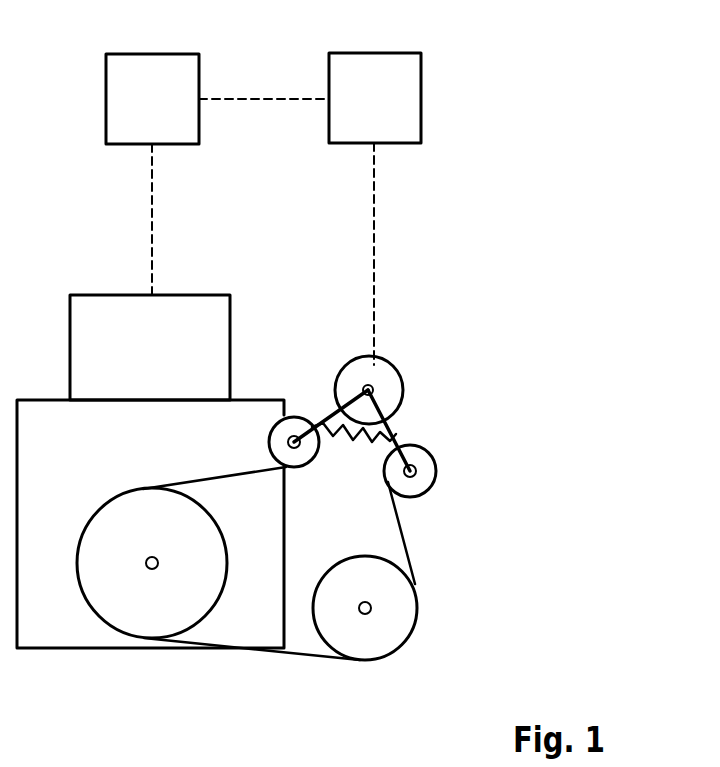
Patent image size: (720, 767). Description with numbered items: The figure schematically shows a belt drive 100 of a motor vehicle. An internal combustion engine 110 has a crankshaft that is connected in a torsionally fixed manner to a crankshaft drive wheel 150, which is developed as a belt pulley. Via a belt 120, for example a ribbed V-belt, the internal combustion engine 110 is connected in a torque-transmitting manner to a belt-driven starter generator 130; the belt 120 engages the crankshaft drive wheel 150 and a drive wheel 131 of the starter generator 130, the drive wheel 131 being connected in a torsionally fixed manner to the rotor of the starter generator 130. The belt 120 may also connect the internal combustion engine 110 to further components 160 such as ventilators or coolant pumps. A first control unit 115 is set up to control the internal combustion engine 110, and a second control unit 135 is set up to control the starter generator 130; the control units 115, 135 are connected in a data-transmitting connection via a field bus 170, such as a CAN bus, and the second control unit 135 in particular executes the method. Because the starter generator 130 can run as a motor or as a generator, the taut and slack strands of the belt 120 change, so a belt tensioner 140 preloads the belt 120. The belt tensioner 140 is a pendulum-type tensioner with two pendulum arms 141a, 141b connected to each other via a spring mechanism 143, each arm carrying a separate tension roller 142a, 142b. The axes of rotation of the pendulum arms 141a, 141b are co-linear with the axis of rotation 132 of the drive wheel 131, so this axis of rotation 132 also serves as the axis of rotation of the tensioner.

The belt drive 100 is at (534, 106).
The internal combustion engine 110 is at (87, 341).
The first control unit 115 is at (122, 102).
The belt 120 is at (405, 535).
The belt-driven starter generator 130 is at (395, 362).
The drive wheel 131 is at (377, 368).
The axis of rotation 132 is at (383, 388).
The second control unit 135 is at (403, 100).
The belt tensioner 140 is at (470, 472).
The pendulum arm 141a is at (397, 423).
The pendulum arm 141b is at (323, 423).
The tension roller 142a is at (425, 462).
The tension roller 142b is at (293, 423).
The spring mechanism 143 is at (348, 427).
The crankshaft drive wheel 150 is at (145, 622).
The further components 160 is at (372, 642).
The field bus 170 is at (256, 97).